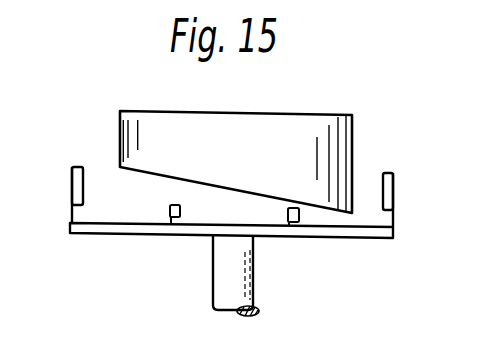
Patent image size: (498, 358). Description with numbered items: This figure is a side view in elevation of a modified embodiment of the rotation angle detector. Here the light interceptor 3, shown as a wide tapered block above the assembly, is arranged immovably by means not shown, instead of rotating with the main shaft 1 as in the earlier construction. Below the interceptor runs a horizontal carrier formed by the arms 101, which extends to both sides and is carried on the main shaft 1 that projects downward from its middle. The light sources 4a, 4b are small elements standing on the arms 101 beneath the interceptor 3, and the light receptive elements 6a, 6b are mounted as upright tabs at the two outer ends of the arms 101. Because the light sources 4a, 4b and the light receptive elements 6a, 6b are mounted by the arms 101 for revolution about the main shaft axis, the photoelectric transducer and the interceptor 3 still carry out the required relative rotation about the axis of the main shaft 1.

The main shaft 1 is at (213, 278).
The light interceptor 3 is at (325, 113).
The light source 4a is at (170, 210).
The light source 4b is at (299, 213).
The light receptive element 6a is at (78, 167).
The light receptive element 6b is at (390, 173).
The arms 101 is at (127, 238).